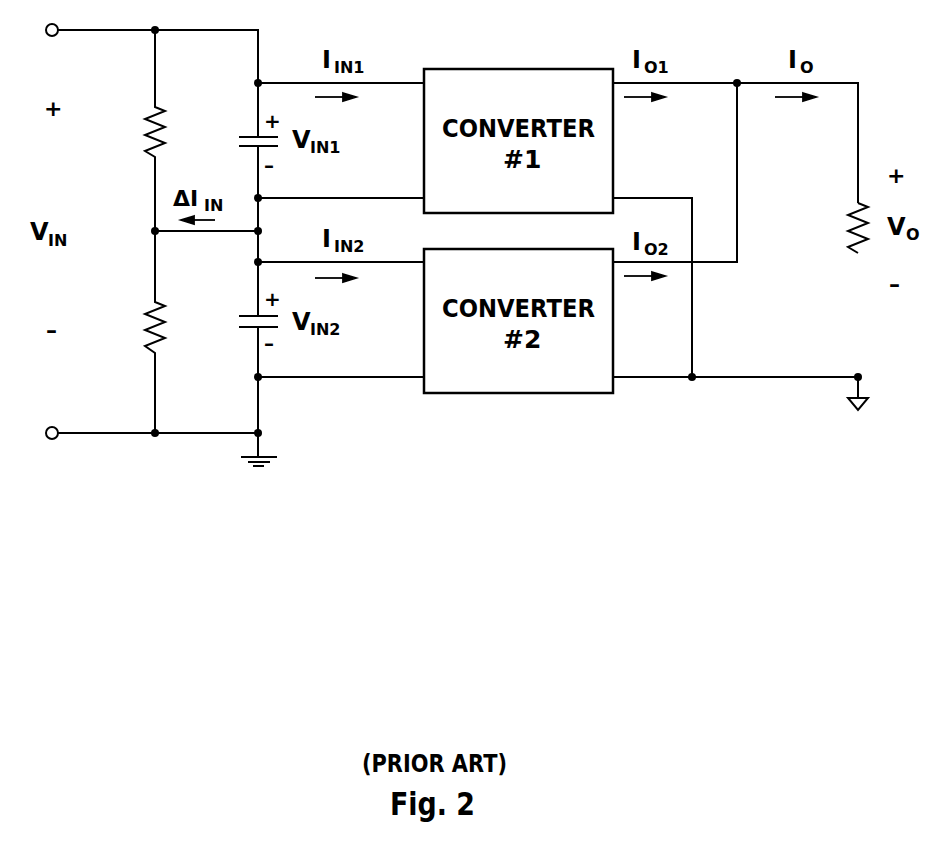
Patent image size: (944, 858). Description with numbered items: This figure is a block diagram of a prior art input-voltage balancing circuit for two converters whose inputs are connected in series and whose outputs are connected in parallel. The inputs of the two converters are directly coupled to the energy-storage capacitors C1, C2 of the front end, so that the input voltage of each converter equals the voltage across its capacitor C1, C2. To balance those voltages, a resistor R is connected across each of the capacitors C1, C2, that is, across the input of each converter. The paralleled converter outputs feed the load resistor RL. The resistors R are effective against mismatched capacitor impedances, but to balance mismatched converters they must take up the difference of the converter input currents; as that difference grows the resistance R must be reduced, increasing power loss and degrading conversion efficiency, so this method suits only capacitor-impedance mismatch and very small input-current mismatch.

The resistor R is at (140, 231).
The capacitor C1 is at (238, 140).
The capacitor C2 is at (238, 319).
The load resistor RL is at (839, 228).